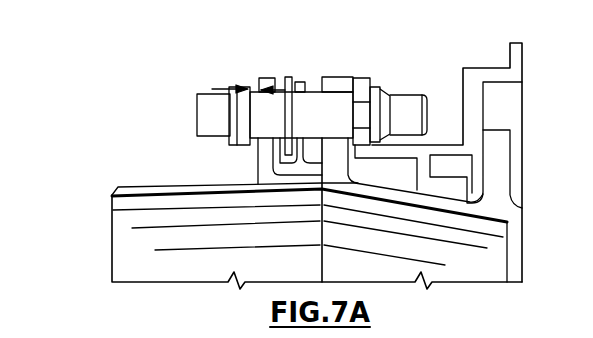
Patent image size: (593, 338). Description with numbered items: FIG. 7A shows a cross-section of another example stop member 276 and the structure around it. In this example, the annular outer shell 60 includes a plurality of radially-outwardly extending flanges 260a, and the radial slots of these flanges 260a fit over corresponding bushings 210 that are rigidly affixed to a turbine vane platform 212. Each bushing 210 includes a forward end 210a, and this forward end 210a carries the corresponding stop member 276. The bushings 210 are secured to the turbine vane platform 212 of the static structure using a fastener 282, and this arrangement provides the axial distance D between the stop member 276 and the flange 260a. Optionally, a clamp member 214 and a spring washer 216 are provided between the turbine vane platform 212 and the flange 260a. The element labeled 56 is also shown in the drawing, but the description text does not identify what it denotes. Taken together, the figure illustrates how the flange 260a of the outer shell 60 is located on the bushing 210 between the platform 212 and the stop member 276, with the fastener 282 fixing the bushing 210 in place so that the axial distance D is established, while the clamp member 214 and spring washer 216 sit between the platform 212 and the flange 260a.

The rotor disk 56 is at (105, 235).
The annular outer shell 60 is at (155, 186).
The bushing 210 is at (308, 107).
The forward end 210a is at (208, 92).
The turbine vane platform 212 is at (345, 88).
The clamp member 214 is at (301, 81).
The spring washer 216 is at (287, 76).
The flange 260a is at (258, 157).
The stop member 276 is at (243, 86).
The fastener 282 is at (197, 120).
The axial distance D is at (228, 89).